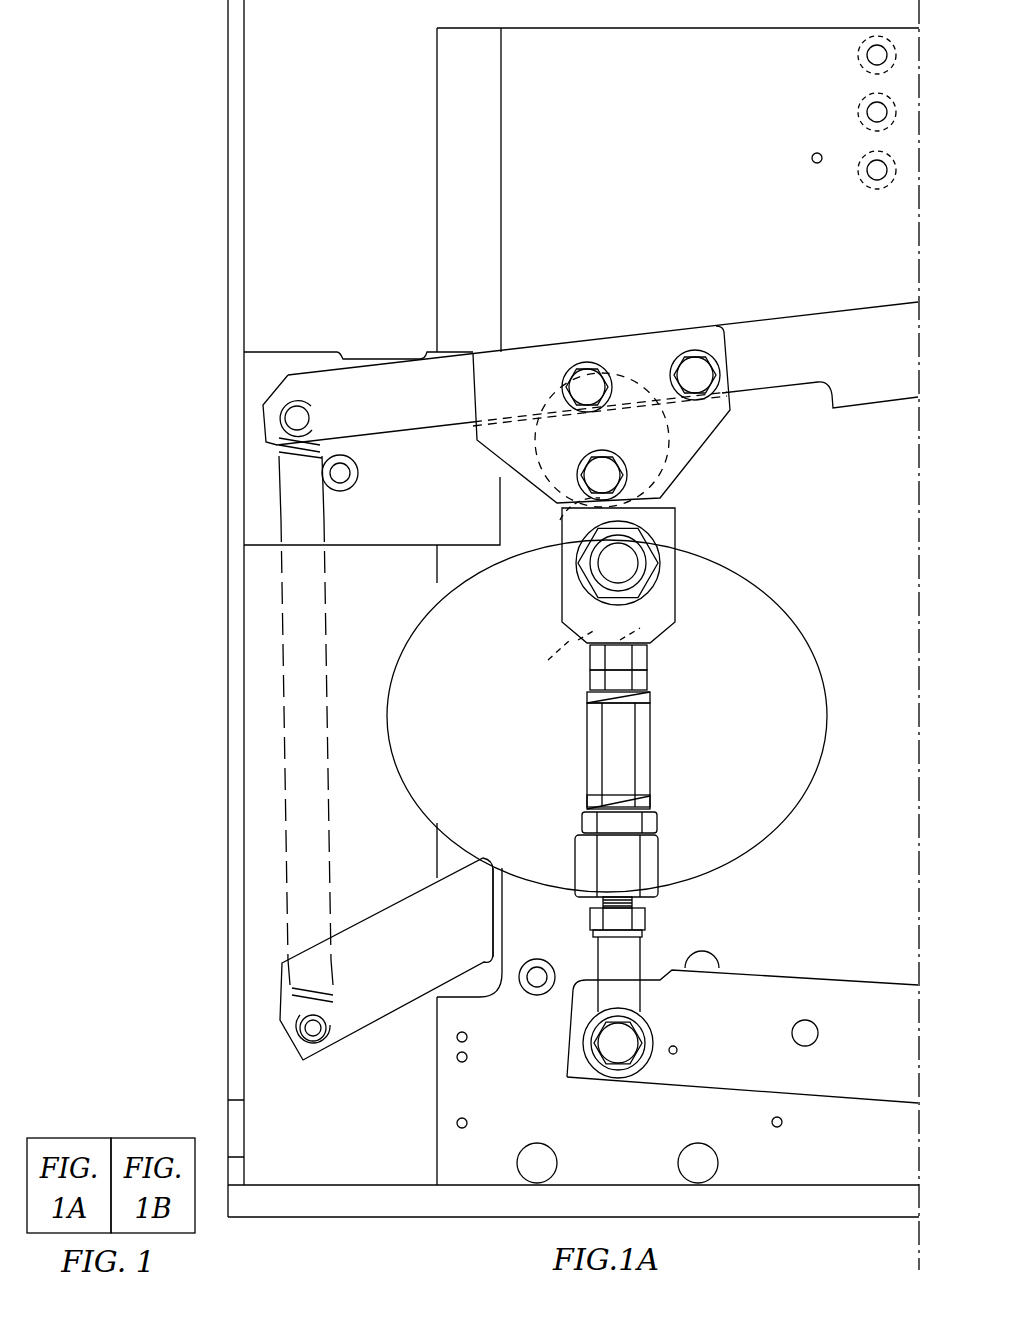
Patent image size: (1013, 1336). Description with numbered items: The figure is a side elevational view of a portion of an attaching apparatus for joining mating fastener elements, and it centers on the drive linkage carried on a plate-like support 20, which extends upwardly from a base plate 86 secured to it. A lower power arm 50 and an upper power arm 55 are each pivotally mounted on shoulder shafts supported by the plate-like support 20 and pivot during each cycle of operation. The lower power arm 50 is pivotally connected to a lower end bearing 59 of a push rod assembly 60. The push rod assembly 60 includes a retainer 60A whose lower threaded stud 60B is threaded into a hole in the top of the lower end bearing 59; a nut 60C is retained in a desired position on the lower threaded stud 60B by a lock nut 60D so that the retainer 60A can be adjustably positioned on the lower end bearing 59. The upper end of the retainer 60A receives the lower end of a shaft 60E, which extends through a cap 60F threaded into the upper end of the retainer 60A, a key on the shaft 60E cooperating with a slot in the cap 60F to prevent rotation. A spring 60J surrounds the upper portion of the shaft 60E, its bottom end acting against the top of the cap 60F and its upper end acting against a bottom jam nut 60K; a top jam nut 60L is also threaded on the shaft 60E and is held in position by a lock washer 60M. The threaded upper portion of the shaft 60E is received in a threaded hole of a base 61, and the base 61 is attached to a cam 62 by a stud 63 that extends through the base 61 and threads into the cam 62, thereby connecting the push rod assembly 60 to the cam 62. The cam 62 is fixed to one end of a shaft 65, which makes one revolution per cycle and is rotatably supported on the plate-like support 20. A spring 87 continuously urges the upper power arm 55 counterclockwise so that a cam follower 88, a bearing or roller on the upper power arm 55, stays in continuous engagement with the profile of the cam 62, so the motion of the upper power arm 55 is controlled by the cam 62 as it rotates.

The plate-like support 20 is at (416, 1113).
The lower power arm 50 is at (827, 976).
The upper power arm 55 is at (788, 312).
The lower end bearing 59 is at (597, 962).
The push rod assembly 60 is at (725, 755).
The retainer 60A is at (660, 875).
The lower threaded stud 60B is at (660, 898).
The nut 60C is at (646, 914).
The lock nut 60D is at (645, 932).
The shaft 60E is at (648, 768).
The cap 60F is at (650, 822).
The spring 60J is at (648, 710).
The bottom jam nut 60K is at (648, 685).
The top jam nut 60L is at (648, 668).
The lock washer 60M is at (648, 650).
The base 61 is at (673, 505).
The cam 62 is at (755, 566).
The stud 63 is at (652, 530).
The shaft 65 is at (550, 661).
The base plate 86 is at (805, 1217).
The spring 87 is at (283, 466).
The cam follower 88 is at (570, 535).